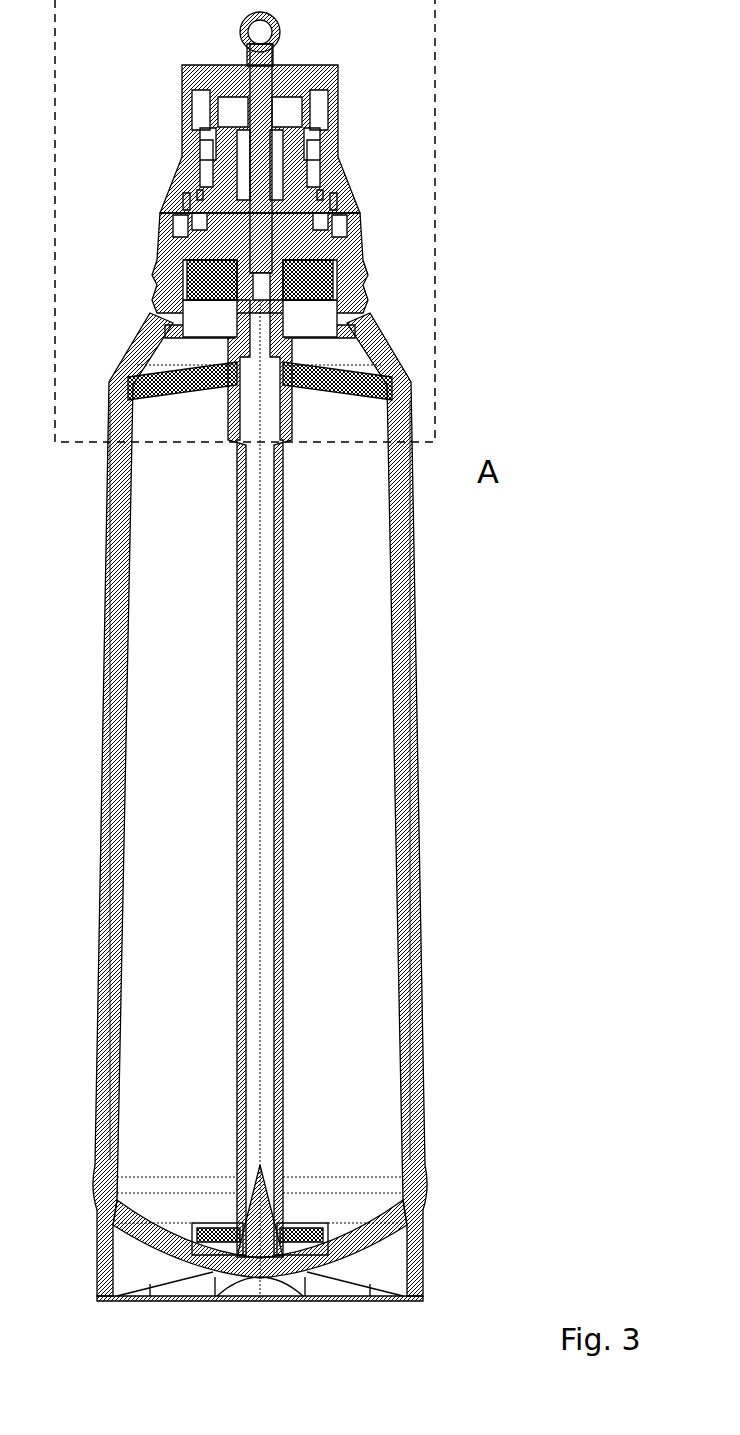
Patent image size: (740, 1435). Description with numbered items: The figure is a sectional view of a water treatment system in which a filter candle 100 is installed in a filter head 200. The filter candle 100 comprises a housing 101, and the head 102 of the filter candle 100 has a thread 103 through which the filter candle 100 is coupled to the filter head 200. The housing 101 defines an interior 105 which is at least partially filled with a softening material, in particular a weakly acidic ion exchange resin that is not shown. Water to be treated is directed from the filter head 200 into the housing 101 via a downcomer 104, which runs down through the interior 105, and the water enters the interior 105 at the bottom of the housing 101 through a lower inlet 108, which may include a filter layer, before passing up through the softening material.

The filter candle 100 is at (447, 740).
The housing 101 is at (398, 627).
The head 102 is at (345, 298).
The thread 103 is at (365, 270).
The downcomer 104 is at (277, 572).
The interior 105 is at (353, 848).
The lower inlet 108 is at (320, 1228).
The filter head 200 is at (345, 198).